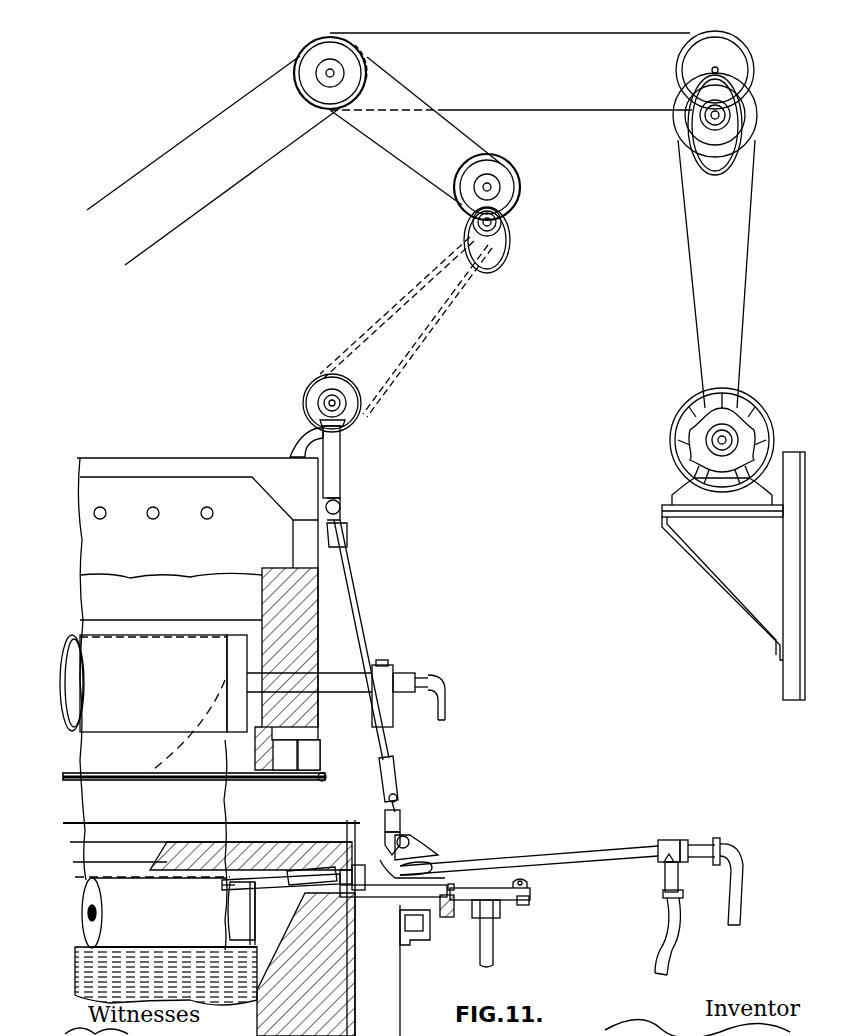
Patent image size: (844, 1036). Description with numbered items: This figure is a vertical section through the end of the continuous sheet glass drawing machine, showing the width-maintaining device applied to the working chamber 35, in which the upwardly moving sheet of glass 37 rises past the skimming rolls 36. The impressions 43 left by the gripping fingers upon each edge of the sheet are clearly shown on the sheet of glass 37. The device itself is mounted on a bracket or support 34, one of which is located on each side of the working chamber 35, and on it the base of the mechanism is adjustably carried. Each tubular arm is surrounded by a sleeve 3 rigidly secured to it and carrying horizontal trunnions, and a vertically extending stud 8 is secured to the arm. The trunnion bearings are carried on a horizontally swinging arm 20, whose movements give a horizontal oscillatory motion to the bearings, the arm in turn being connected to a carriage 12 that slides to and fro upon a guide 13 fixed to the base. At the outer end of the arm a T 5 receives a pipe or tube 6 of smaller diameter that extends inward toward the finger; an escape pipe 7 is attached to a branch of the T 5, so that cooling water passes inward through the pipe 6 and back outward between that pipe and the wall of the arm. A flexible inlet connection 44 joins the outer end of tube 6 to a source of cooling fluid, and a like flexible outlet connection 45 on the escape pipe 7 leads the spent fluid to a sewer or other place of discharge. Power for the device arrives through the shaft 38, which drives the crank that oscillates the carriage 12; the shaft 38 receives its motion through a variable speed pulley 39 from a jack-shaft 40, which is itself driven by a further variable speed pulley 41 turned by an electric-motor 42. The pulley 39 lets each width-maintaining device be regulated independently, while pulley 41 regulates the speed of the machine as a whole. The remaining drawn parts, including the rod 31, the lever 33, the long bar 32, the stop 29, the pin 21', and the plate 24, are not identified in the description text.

The jack-shaft 40 is at (304, 52).
The variable speed pulley 39 is at (505, 193).
The variable speed pulley 41 is at (752, 87).
The electric-motor 42 is at (668, 448).
The shaft 38 is at (366, 650).
The sheet of glass 37 is at (88, 746).
The impressions 43 is at (190, 742).
The skimming rolls 36 is at (82, 910).
The working chamber 35 is at (226, 995).
The rod 31 is at (281, 886).
The carriage 12 is at (356, 903).
The guide 13 is at (380, 900).
The bracket or support 34 is at (400, 948).
The sleeve 3 is at (366, 866).
The stud 8 is at (385, 852).
The lever 33 is at (418, 846).
The rod 32 is at (520, 856).
The horizontally swinging arm 20 is at (485, 894).
The stop 29 is at (464, 880).
The pin 21' is at (535, 876).
The plate 24 is at (528, 905).
The T 5 is at (669, 840).
The pipe or tube 6 is at (698, 844).
The escape pipe 7 is at (665, 878).
The flexible inlet connection 44 is at (745, 866).
The flexible outlet connection 45 is at (677, 932).